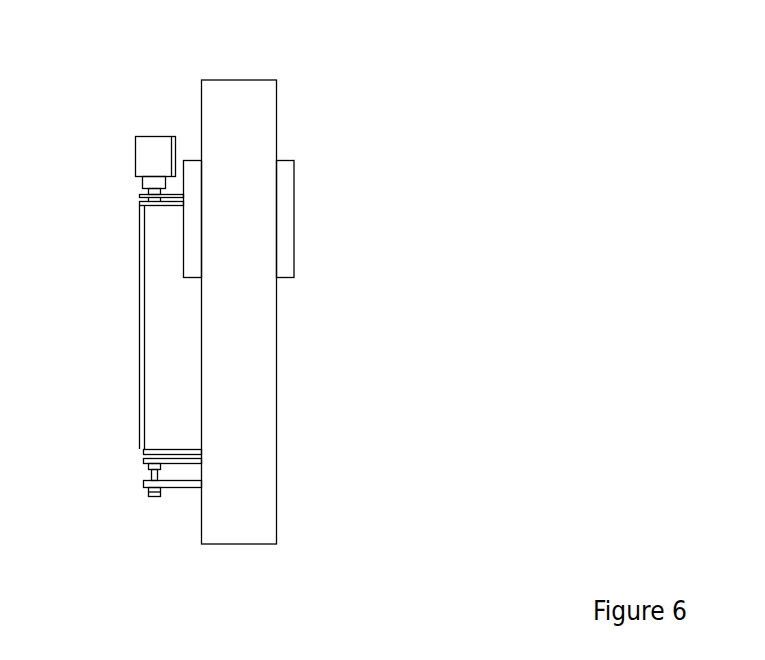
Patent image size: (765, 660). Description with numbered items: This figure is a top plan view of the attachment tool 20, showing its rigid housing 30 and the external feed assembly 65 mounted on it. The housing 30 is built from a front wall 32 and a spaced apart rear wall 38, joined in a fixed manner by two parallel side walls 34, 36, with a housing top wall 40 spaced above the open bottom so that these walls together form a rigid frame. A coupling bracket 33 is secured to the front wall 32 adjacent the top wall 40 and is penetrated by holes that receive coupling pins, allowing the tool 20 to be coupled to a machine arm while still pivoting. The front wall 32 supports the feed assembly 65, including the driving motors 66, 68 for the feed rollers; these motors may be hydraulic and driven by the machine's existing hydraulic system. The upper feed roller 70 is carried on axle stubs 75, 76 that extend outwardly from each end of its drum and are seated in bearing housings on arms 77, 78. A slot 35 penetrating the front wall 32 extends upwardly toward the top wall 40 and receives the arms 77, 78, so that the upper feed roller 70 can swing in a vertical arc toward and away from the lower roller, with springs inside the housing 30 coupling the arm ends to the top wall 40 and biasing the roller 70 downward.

The attachment tool 20 is at (131, 52).
The rigid housing 30 is at (304, 552).
The front wall 32 is at (200, 508).
The coupling bracket 33 is at (188, 235).
The side wall 34 is at (260, 544).
The slot 35 is at (289, 203).
The side wall 36 is at (258, 80).
The rear wall 38 is at (277, 363).
The housing top wall 40 is at (233, 90).
The feed assembly 65 is at (113, 315).
The driving motor 66 is at (147, 148).
The driving motor 68 is at (172, 136).
The upper feed roller 70 is at (141, 398).
The axle stub 75 is at (150, 193).
The axle stub 76 is at (150, 450).
The arm 77 is at (147, 199).
The arm 78 is at (177, 460).